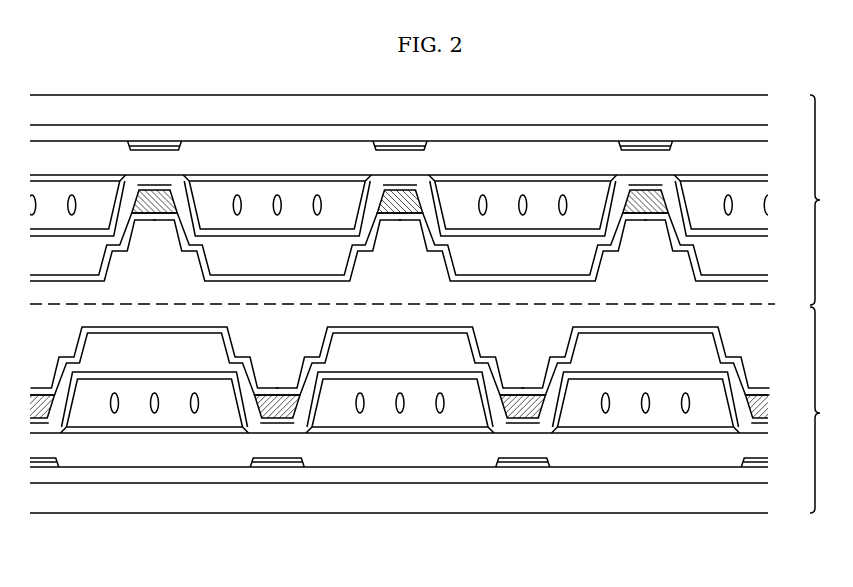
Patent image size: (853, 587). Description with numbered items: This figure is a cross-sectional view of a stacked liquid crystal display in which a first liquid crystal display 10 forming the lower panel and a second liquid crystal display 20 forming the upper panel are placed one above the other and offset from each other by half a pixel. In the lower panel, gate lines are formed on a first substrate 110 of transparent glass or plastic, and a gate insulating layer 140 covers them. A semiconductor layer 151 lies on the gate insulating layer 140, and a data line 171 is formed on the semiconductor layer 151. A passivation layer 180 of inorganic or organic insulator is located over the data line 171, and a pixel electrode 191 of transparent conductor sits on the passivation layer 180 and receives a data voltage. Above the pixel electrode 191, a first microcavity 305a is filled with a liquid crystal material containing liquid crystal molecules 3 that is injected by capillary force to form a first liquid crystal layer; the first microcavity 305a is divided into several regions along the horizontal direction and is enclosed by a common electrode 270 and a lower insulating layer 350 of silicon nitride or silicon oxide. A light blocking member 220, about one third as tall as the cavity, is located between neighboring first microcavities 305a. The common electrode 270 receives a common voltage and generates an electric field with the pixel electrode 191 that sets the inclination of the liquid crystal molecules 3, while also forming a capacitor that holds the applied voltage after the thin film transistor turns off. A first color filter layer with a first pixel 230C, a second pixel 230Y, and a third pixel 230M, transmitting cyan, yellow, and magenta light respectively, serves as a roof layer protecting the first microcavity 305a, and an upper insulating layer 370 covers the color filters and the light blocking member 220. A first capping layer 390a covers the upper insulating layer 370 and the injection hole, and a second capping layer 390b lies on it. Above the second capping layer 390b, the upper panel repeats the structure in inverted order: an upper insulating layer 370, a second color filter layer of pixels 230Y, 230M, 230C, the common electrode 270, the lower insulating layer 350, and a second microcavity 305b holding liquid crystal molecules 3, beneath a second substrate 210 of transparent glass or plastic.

The first liquid crystal display 10 is at (825, 410).
The second liquid crystal display 20 is at (825, 200).
The first substrate 110 is at (625, 498).
The gate insulating layer 140 is at (736, 132).
The semiconductor layer 151 is at (140, 142).
The data line 171 is at (171, 141).
The passivation layer 180 is at (249, 150).
The pixel electrode 191 is at (375, 430).
The second substrate 210 is at (659, 110).
The light blocking member 220 is at (408, 205).
The first pixel 230C is at (339, 304).
The third pixel 230M is at (461, 304).
The second pixel 230Y is at (426, 304).
The common electrode 270 is at (461, 232).
The first microcavity 305a is at (92, 407).
The second microcavity 305b is at (581, 195).
The lower insulating layer 350 is at (387, 187).
The upper insulating layer 370 is at (335, 279).
The first capping layer 390a is at (767, 320).
The second capping layer 390b is at (767, 293).
The liquid crystal molecules 3 is at (153, 412).